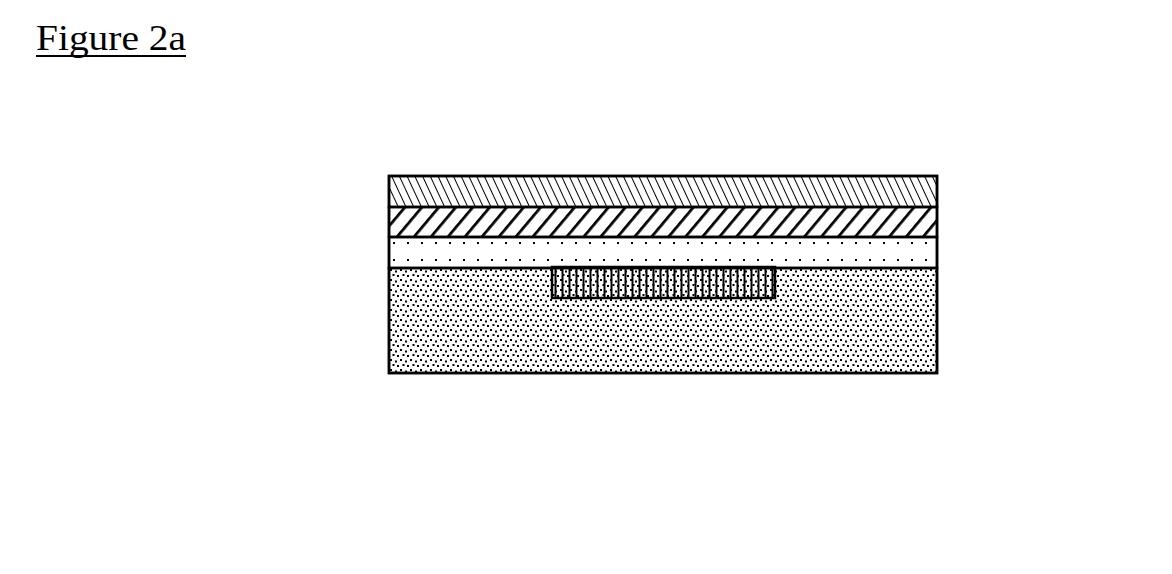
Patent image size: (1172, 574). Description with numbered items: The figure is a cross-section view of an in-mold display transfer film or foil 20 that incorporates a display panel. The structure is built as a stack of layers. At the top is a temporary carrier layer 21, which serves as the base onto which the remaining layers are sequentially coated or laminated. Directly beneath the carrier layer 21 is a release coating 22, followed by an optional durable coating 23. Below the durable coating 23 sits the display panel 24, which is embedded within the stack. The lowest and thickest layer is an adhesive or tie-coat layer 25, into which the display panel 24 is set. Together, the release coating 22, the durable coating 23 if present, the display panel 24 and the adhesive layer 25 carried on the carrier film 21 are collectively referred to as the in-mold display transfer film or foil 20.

The in-mold display transfer film or foil 20 is at (360, 178).
The temporary carrier layer 21 is at (912, 192).
The release coating 22 is at (912, 221).
The durable coating 23 is at (912, 255).
The display panel 24 is at (578, 283).
The adhesive or tie-coat layer 25 is at (912, 321).